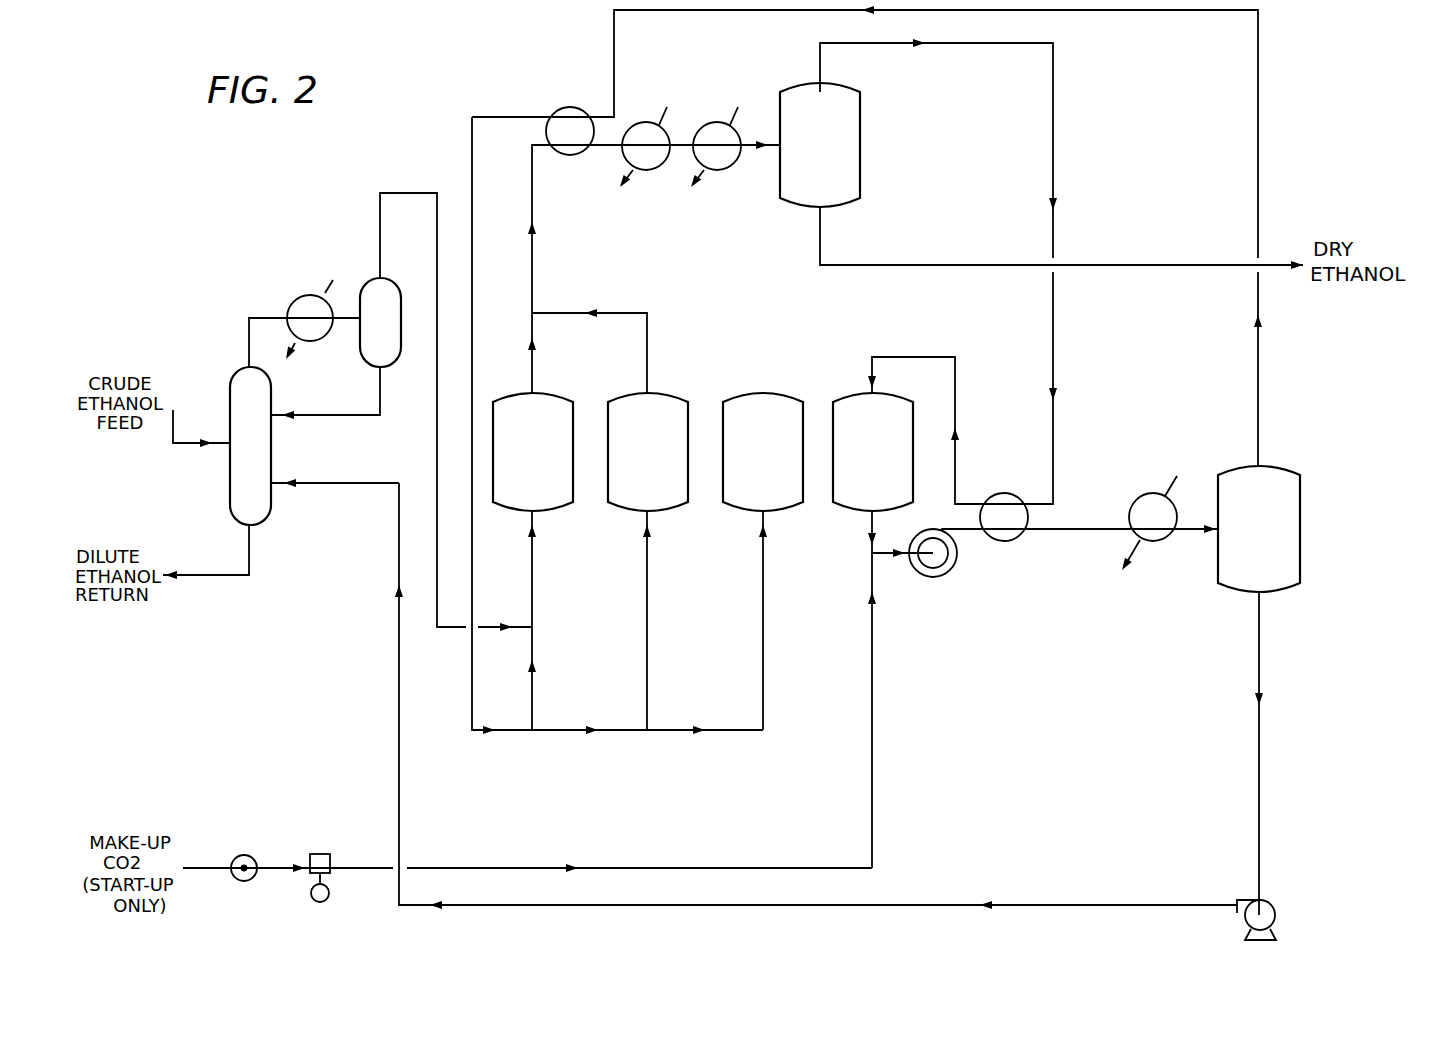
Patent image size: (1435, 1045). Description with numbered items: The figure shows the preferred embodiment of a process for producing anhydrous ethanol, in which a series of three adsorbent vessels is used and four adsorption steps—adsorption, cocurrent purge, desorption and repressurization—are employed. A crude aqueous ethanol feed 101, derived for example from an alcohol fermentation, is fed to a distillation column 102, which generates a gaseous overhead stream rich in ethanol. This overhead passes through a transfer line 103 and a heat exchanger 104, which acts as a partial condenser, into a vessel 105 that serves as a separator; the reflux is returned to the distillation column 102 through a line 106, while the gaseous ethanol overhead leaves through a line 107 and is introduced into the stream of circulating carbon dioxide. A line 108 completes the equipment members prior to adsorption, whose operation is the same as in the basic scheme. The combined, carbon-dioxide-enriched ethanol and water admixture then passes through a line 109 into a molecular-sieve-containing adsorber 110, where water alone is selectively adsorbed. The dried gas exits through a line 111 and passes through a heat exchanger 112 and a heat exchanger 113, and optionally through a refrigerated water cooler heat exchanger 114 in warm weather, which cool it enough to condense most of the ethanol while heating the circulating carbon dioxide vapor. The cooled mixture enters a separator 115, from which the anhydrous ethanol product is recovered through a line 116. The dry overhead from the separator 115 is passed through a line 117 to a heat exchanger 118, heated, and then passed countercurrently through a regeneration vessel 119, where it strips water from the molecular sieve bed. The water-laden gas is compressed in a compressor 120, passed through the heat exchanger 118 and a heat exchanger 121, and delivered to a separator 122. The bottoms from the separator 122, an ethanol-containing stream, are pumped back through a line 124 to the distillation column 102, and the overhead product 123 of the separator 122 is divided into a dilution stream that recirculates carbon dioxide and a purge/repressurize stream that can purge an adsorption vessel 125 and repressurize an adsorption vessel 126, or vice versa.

The crude aqueous ethanol feed 101 is at (188, 447).
The distillation column 102 is at (236, 465).
The transfer line 103 is at (250, 315).
The heat exchanger 104 is at (296, 298).
The vessel 105 is at (367, 335).
The line 106 is at (380, 407).
The line 107 is at (416, 192).
The line 108 is at (437, 462).
The line 109 is at (534, 567).
The adsorber 110 is at (520, 465).
The line 111 is at (534, 368).
The heat exchanger 112 is at (568, 107).
The heat exchanger 113 is at (636, 122).
The heat exchanger 114 is at (707, 122).
The separator 115 is at (807, 157).
The line 116 is at (917, 264).
The line 117 is at (1006, 46).
The heat exchanger 118 is at (1011, 484).
The regeneration vessel 119 is at (860, 465).
The compressor 120 is at (937, 578).
The heat exchanger 121 is at (1153, 541).
The separator 122 is at (1246, 545).
The overhead product 123 is at (513, 733).
The line 124 is at (400, 791).
The adsorption vessel 125 is at (635, 465).
The adsorption vessel 126 is at (750, 465).